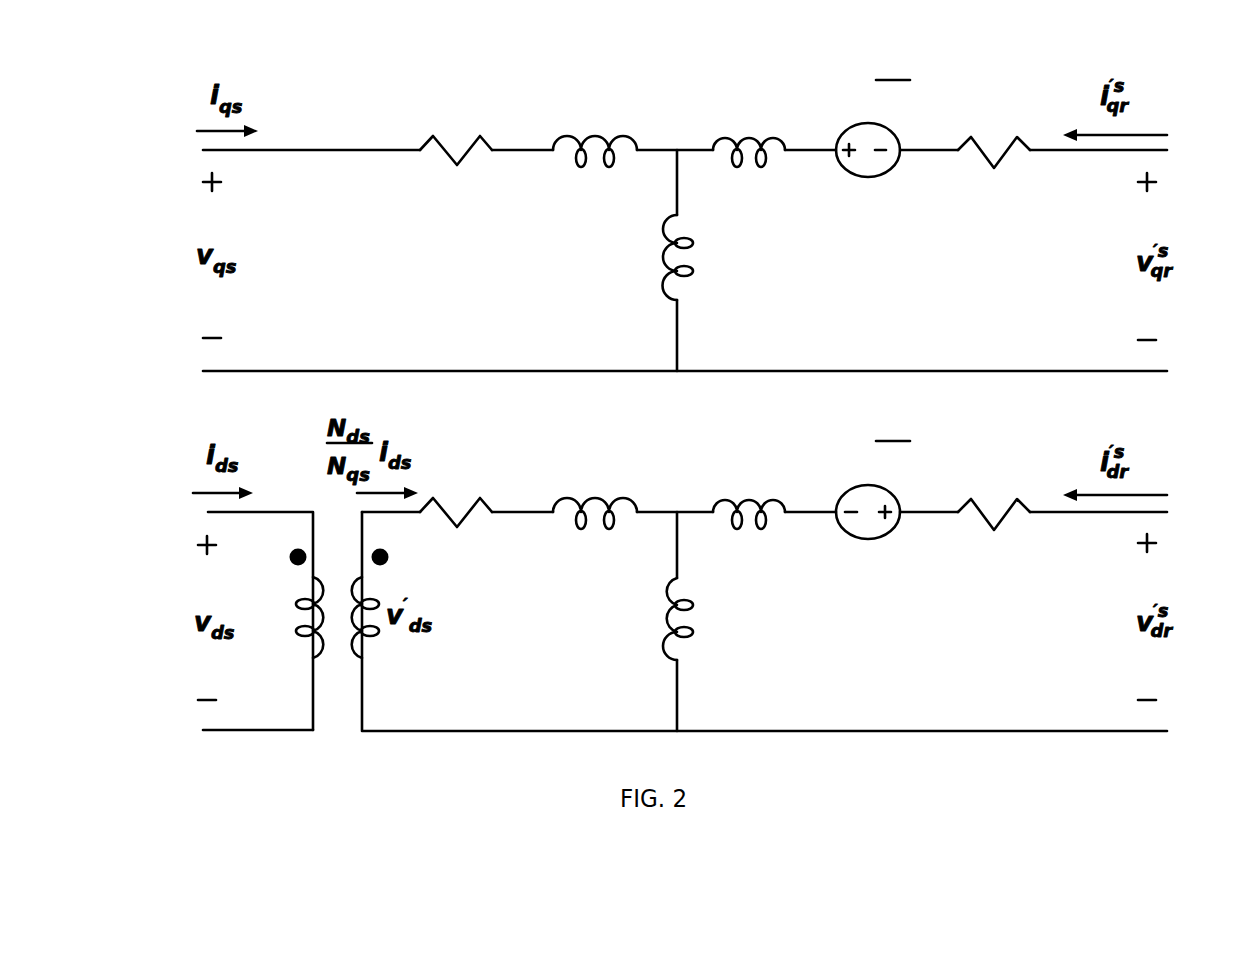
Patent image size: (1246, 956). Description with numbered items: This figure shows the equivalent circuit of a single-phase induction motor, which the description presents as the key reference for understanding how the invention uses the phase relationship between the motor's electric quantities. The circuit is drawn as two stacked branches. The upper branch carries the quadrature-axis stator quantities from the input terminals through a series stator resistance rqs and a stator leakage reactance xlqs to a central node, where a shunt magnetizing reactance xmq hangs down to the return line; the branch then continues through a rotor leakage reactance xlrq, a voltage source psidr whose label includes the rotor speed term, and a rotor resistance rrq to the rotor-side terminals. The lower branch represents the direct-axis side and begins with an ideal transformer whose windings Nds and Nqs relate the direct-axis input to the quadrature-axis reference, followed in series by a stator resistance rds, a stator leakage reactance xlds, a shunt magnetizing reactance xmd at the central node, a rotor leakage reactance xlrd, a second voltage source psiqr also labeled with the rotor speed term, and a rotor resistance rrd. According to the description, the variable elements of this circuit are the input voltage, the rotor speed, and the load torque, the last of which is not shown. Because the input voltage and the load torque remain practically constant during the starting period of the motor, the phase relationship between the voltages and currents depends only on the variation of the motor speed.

The q-axis stator resistance r_qs rqs is at (456, 127).
The q-axis stator leakage reactance x_lqs xlqs is at (595, 129).
The rotor leakage reactance x'_lr (q-axis circuit) xlrq is at (749, 126).
The speed voltage source psi'_dr omega_r/omega_b psidr is at (867, 113).
The rotor resistance r'_r (q-axis circuit) rrq is at (994, 125).
The q-axis magnetizing reactance x_mq xmq is at (706, 257).
The d-axis stator winding N_ds Nds is at (293, 665).
The q-axis referred winding N_qs Nqs is at (380, 665).
The d-axis stator resistance r'_ds rds is at (456, 486).
The d-axis stator leakage reactance x'_lds xlds is at (595, 487).
The rotor leakage reactance x'_lr (d-axis circuit) xlrd is at (749, 487).
The speed voltage source psi'_qr omega_r/omega_b psiqr is at (867, 474).
The rotor resistance r'_r (d-axis circuit) rrd is at (994, 488).
The d-axis magnetizing reactance x'_md xmd is at (708, 619).